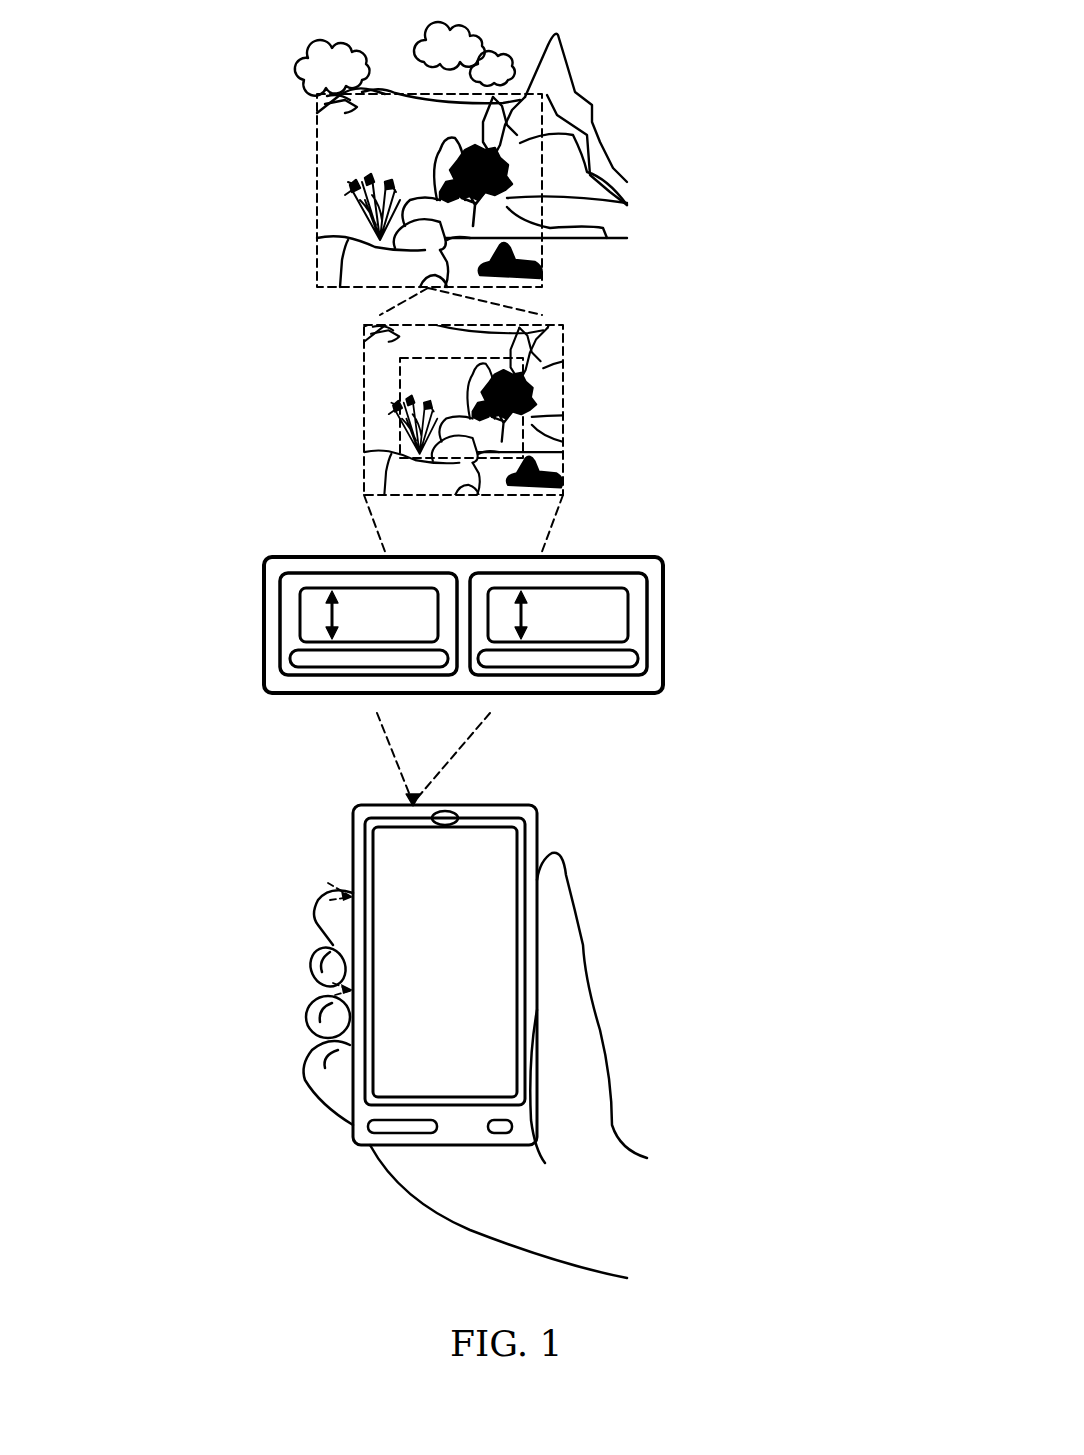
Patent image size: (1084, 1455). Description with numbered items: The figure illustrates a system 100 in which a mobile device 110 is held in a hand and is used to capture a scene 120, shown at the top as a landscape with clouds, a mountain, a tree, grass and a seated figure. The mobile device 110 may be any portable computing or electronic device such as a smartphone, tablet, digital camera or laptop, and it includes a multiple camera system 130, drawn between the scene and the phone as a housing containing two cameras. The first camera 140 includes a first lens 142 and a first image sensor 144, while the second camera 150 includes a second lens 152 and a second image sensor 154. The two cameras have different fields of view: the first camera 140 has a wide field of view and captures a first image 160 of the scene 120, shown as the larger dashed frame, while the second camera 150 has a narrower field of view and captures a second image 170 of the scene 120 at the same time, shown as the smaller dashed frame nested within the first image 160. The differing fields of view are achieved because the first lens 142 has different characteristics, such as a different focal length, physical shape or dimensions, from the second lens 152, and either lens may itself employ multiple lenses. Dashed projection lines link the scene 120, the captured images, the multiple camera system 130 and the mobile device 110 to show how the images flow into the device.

The system 100 is at (727, 54).
The mobile device 110 is at (462, 976).
The scene 120 is at (412, 70).
The multiple camera system 130 is at (264, 655).
The first camera 140 is at (327, 573).
The first lens 142 is at (300, 613).
The first image sensor 144 is at (330, 667).
The second camera 150 is at (607, 573).
The second lens 152 is at (628, 612).
The second image sensor 154 is at (594, 667).
The first image 160 is at (364, 410).
The second image 170 is at (563, 395).